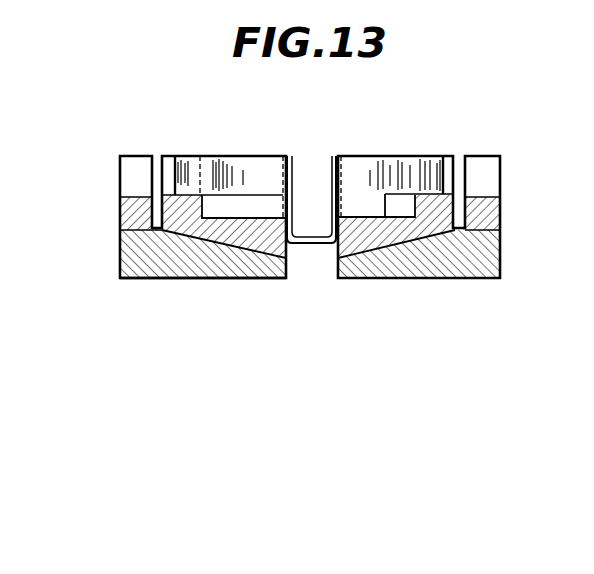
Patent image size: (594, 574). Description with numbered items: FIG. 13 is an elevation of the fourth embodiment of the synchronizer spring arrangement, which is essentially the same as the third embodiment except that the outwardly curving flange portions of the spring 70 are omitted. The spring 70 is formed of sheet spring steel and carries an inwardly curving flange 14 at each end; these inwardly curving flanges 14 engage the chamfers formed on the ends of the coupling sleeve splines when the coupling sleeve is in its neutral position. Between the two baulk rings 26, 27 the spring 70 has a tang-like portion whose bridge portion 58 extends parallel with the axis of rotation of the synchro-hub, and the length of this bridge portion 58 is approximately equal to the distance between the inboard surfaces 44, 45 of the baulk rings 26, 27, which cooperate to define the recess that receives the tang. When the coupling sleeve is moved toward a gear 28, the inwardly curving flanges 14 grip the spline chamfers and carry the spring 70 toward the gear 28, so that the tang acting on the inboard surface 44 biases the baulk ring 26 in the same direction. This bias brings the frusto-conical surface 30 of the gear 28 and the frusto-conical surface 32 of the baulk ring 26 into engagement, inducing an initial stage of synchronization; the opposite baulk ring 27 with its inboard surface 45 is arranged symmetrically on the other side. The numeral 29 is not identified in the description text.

The inwardly curving flange 14 is at (193, 168).
The spring 70 is at (258, 143).
The bridge portion 58 is at (310, 237).
The gear 28 is at (125, 210).
The right upper core piece 29 is at (488, 222).
The frusto-conical surface 30 is at (178, 240).
The baulk ring 26 is at (217, 247).
The frusto-conical surface 32 is at (250, 258).
The inboard surface 44 is at (293, 250).
The inboard surface 45 is at (333, 258).
The baulk ring 27 is at (405, 238).